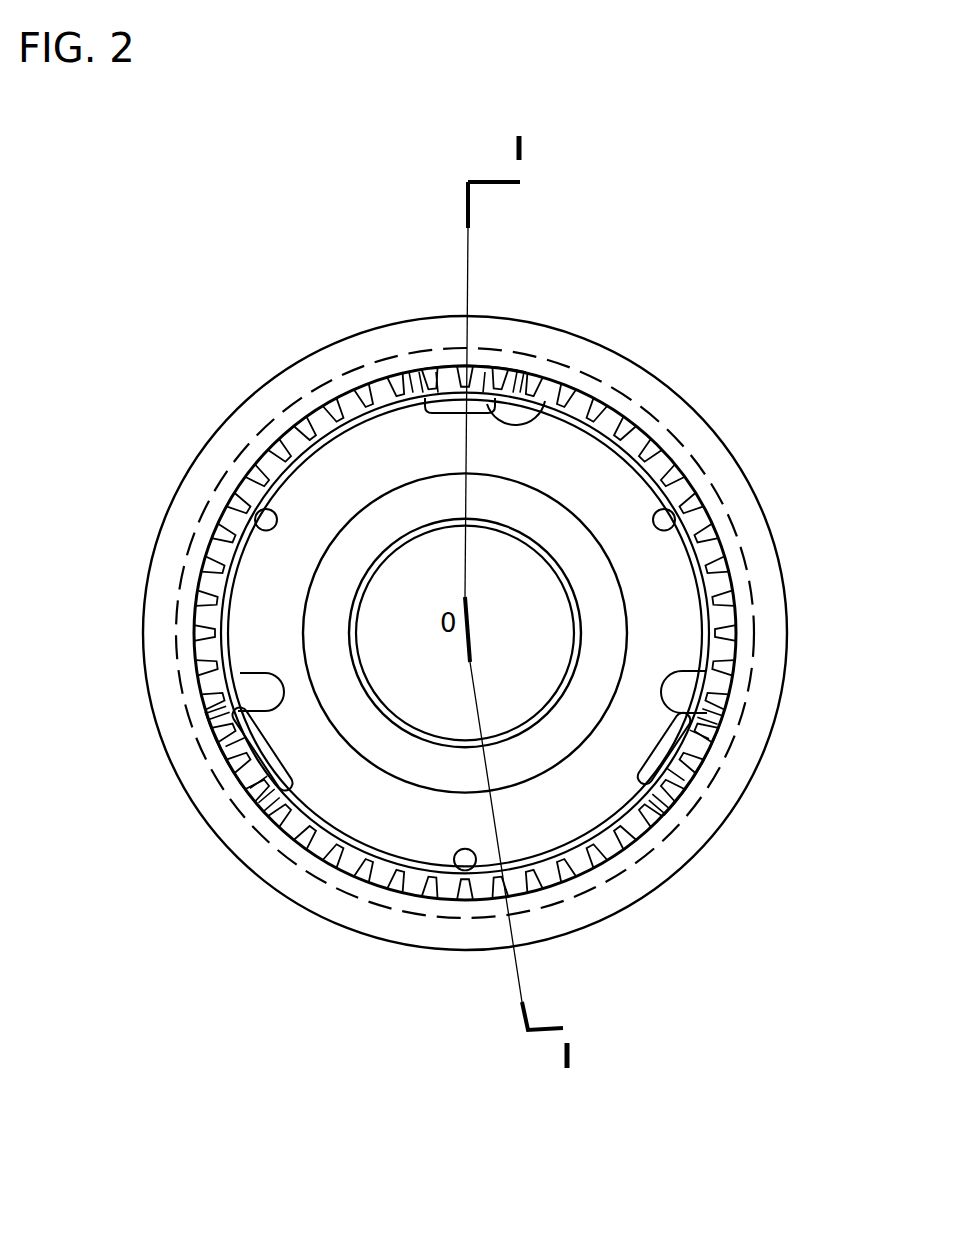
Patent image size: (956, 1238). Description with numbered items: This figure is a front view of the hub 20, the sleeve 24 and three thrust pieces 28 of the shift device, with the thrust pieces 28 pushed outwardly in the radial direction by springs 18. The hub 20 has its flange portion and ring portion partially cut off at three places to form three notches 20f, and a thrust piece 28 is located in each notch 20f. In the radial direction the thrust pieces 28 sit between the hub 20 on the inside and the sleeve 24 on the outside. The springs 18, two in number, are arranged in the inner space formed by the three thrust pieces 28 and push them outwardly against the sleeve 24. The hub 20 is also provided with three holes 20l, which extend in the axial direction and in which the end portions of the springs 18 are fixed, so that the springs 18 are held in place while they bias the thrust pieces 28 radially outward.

The spring 18 is at (292, 818).
The hub 20 is at (287, 555).
The notch 20f is at (530, 400).
The hole 20l is at (676, 526).
The sleeve 24 is at (655, 400).
The thrust piece 28 is at (427, 386).